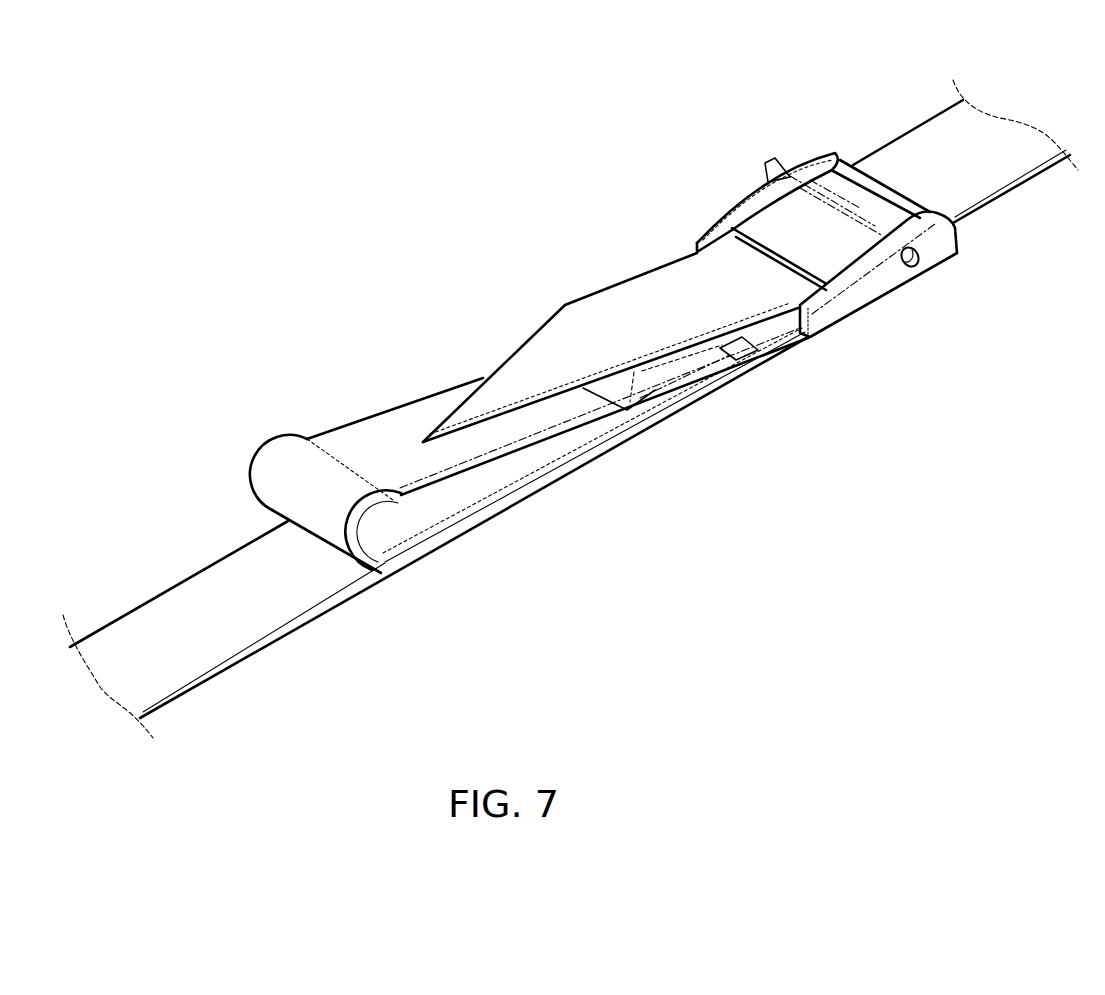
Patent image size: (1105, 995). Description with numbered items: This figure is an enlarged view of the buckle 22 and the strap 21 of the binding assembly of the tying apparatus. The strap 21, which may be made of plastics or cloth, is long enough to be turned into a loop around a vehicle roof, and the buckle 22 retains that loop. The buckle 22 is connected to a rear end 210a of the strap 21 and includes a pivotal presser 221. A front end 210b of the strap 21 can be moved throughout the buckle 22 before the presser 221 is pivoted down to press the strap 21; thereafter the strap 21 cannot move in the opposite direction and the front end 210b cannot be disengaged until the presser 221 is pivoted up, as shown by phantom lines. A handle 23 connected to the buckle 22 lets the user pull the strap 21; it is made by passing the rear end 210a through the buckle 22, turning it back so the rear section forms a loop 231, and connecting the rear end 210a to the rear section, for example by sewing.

The strap 21 is at (283, 633).
The buckle 22 is at (887, 302).
The pivotal presser 221 is at (755, 223).
The handle 23 is at (342, 442).
The loop 231 is at (437, 518).
The rear end 210a is at (723, 357).
The front end 210b is at (553, 347).